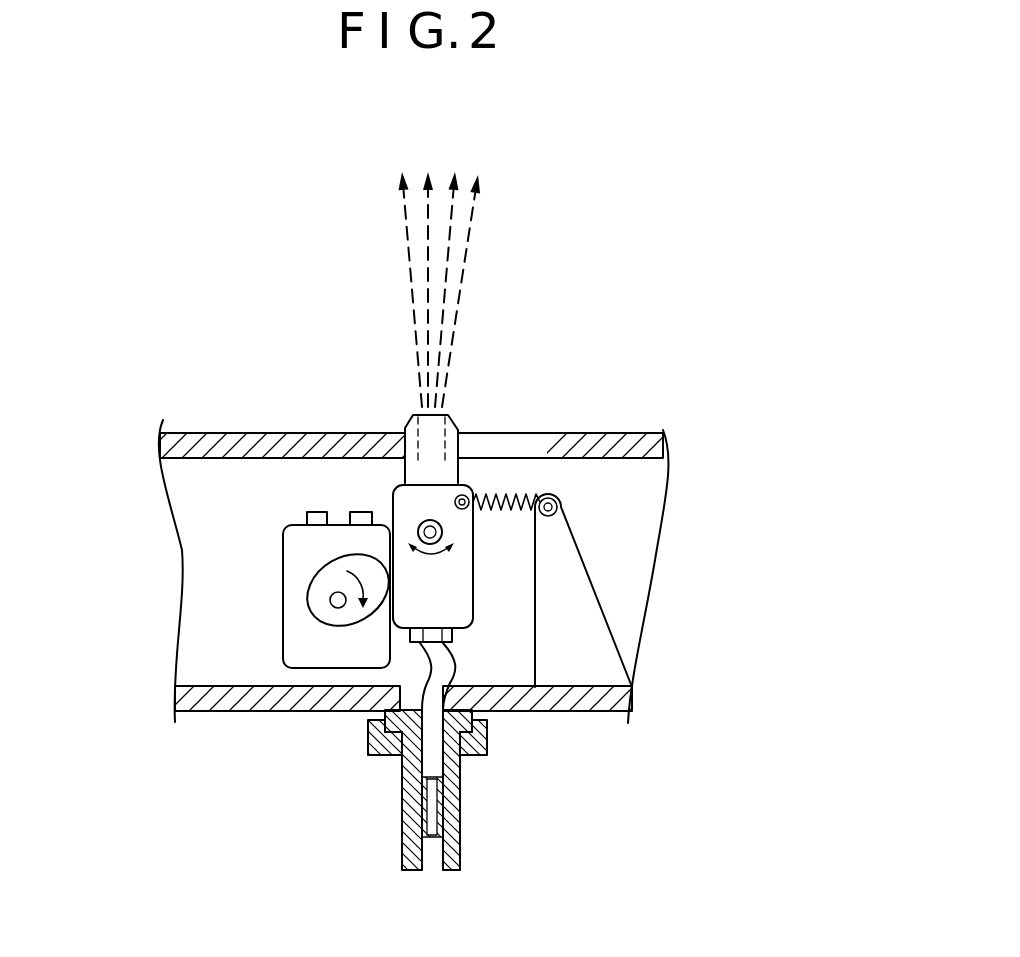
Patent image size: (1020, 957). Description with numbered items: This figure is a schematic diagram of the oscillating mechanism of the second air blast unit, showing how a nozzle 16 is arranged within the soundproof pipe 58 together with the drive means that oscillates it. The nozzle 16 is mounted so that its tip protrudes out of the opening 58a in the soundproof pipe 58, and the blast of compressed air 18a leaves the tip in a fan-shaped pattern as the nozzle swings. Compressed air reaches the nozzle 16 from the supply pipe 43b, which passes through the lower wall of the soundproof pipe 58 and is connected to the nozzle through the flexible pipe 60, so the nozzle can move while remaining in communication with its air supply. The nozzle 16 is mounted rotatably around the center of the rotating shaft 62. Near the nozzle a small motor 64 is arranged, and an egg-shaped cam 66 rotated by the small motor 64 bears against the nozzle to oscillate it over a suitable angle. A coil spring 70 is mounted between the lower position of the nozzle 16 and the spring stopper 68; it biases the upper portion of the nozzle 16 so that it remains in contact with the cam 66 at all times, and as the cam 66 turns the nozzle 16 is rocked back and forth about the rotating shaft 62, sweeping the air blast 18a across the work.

The spray of fluid 18a is at (472, 228).
The nozzle 16 is at (447, 474).
The opening 58a is at (549, 447).
The soundproof pipe 58 is at (633, 440).
The rotating shaft 62 is at (419, 525).
The coil spring 70 is at (527, 513).
The spring stopper 68 is at (603, 651).
The small motor 64 is at (292, 543).
The cam 66 is at (322, 618).
The flexible pipe 60 is at (455, 670).
The pipe 43b is at (402, 797).